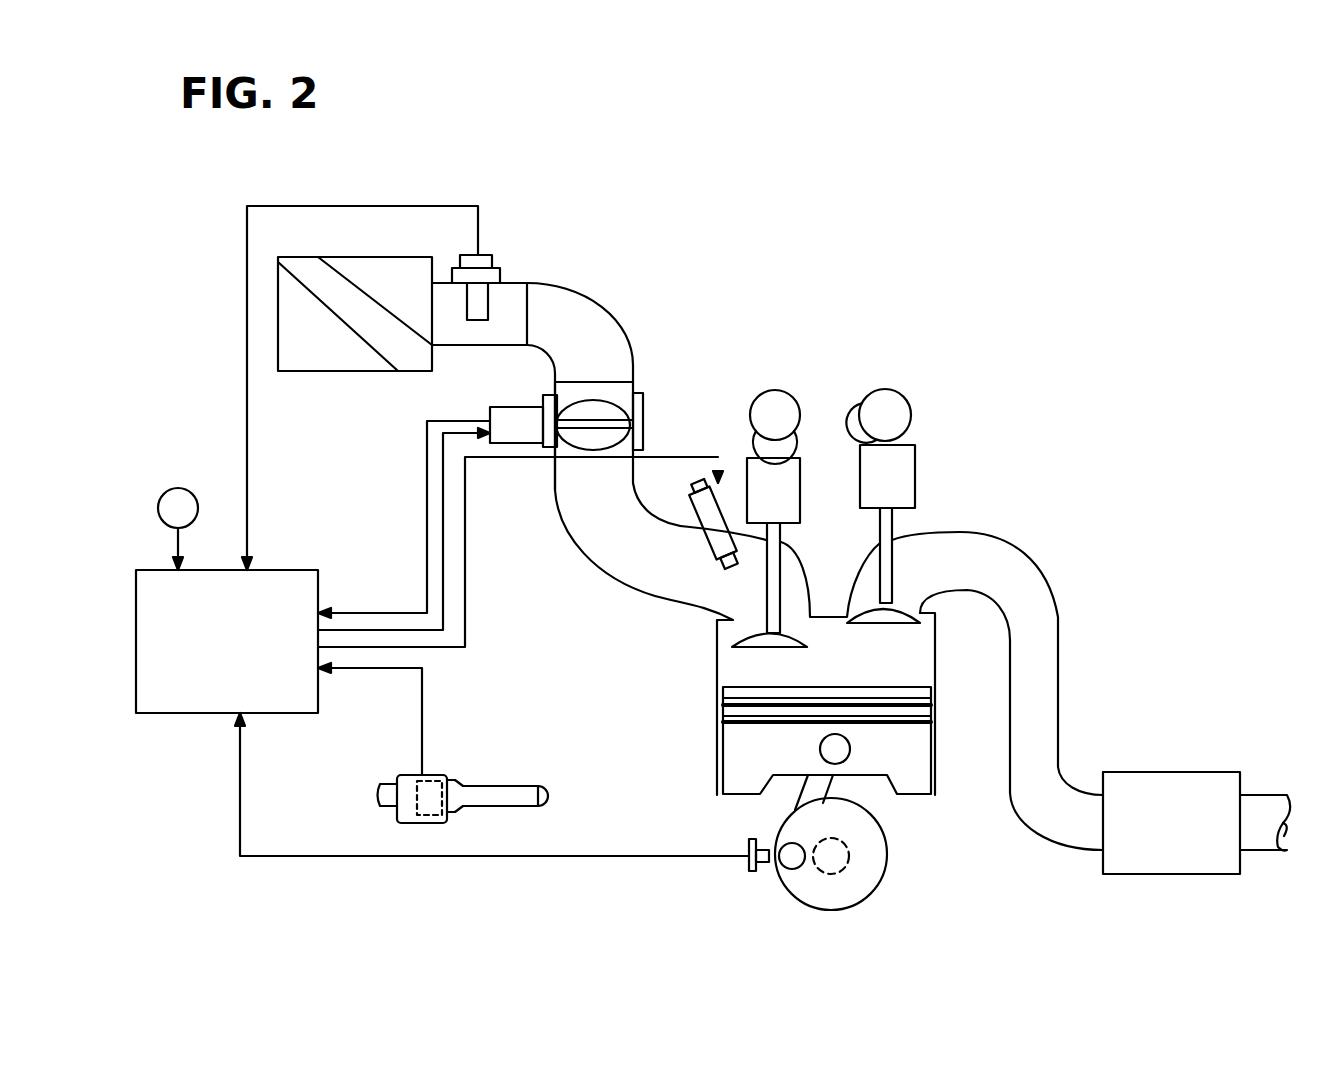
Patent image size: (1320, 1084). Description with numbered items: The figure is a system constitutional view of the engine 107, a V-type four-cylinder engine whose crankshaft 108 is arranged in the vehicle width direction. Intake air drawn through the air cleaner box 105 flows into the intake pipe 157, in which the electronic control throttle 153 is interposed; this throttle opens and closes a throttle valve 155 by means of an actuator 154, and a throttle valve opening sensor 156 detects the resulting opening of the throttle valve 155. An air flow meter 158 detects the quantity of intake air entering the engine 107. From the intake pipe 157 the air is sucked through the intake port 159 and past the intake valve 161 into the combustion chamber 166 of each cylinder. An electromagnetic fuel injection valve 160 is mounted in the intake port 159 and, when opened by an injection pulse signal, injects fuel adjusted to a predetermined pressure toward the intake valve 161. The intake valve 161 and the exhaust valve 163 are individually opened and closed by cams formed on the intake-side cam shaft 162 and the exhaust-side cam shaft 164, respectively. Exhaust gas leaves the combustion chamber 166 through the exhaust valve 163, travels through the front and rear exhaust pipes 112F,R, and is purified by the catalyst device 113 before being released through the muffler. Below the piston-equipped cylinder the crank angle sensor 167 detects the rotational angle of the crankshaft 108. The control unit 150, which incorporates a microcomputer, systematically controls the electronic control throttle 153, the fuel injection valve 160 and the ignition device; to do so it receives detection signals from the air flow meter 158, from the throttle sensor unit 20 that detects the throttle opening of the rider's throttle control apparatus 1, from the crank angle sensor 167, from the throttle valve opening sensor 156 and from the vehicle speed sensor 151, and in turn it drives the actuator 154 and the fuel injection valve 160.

The throttle control apparatus 1 is at (527, 737).
The throttle sensor unit 20 is at (438, 777).
The air cleaner box 105 is at (312, 350).
The engine 107 is at (695, 746).
The crankshaft 108 is at (883, 878).
The front and rear exhaust pipes 112F,R is at (1037, 595).
The catalyst device 113 is at (1180, 863).
The control unit 150 is at (180, 690).
The vehicle speed sensor 151 is at (172, 505).
The electronic control throttle 153 is at (455, 390).
The actuator 154 is at (525, 420).
The throttle valve 155 is at (593, 410).
The throttle valve opening sensor 156 is at (643, 418).
The intake pipe 157 is at (573, 320).
The air flow meter 158 is at (490, 260).
The intake port 159 is at (645, 585).
The fuel injection valve 160 is at (705, 518).
The intake valve 161 is at (781, 540).
The intake-side cam shaft 162 is at (778, 398).
The exhaust valve 163 is at (892, 537).
The exhaust-side cam shaft 164 is at (895, 410).
The combustion chamber 166 is at (913, 670).
The crank angle sensor 167 is at (751, 871).